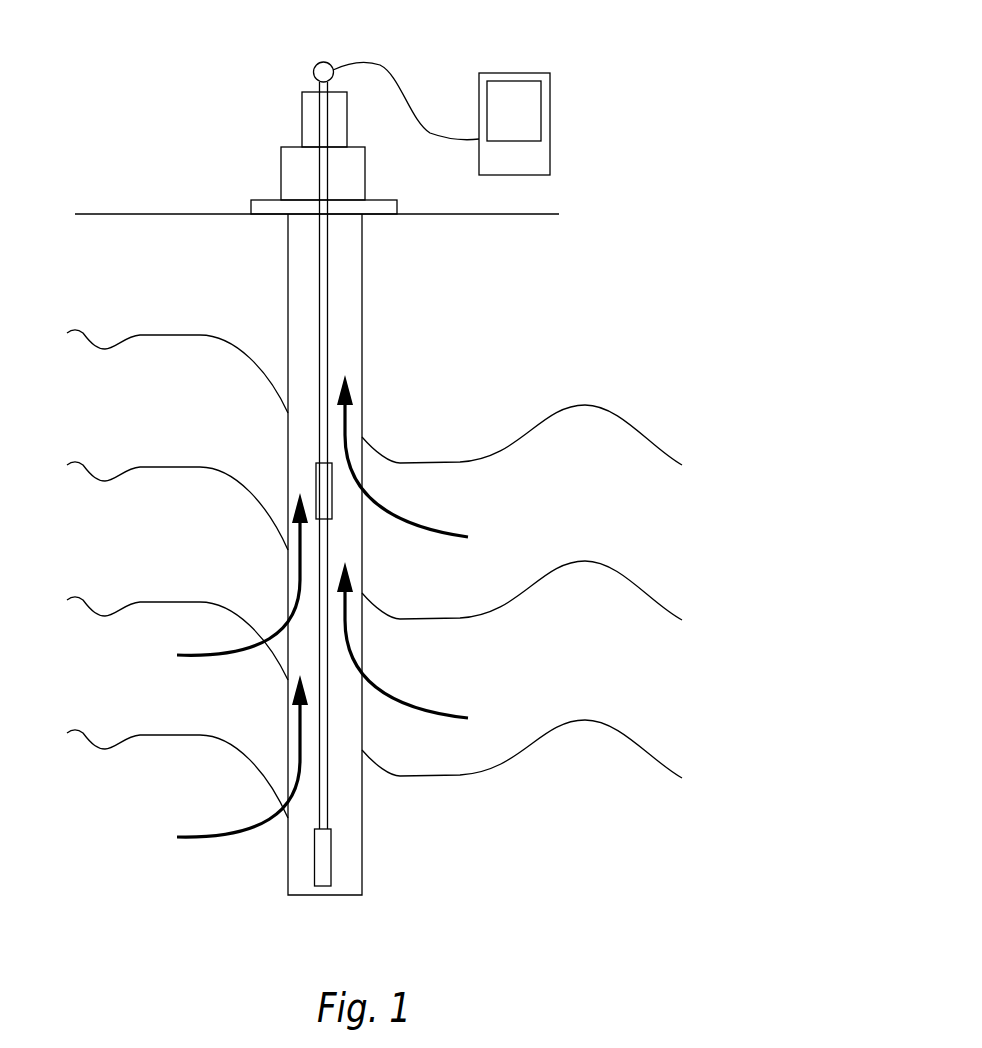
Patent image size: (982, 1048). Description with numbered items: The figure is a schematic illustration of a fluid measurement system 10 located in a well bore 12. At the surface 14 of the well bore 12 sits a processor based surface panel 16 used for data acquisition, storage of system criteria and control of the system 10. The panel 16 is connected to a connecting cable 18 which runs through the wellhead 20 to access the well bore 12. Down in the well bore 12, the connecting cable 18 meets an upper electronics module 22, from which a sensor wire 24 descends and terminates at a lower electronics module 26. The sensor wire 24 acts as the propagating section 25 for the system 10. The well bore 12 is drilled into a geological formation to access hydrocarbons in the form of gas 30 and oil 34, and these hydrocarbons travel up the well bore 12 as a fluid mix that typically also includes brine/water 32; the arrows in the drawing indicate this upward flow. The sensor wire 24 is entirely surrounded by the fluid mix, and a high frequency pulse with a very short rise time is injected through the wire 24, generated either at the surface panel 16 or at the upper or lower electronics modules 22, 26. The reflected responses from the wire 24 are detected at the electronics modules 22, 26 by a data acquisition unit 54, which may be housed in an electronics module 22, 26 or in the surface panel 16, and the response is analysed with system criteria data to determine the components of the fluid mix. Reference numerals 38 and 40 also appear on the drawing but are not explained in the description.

The fluid measurement system 10 is at (190, 296).
The well bore 12 is at (363, 262).
The surface 14 is at (171, 212).
The surface panel 16 is at (525, 108).
The connecting cable 18 is at (328, 305).
The wellhead 20 is at (282, 168).
The upper electronics module 22 is at (323, 492).
The sensor wire 24 is at (325, 730).
The propagating section 25 is at (328, 696).
The lower electronics module 26 is at (327, 860).
The gas 30 is at (84, 836).
The brine/water 32 is at (84, 695).
The oil 34 is at (84, 555).
The sensor 38 is at (330, 523).
The gauge 40 is at (330, 830).
The data acquisition unit 54 is at (550, 143).